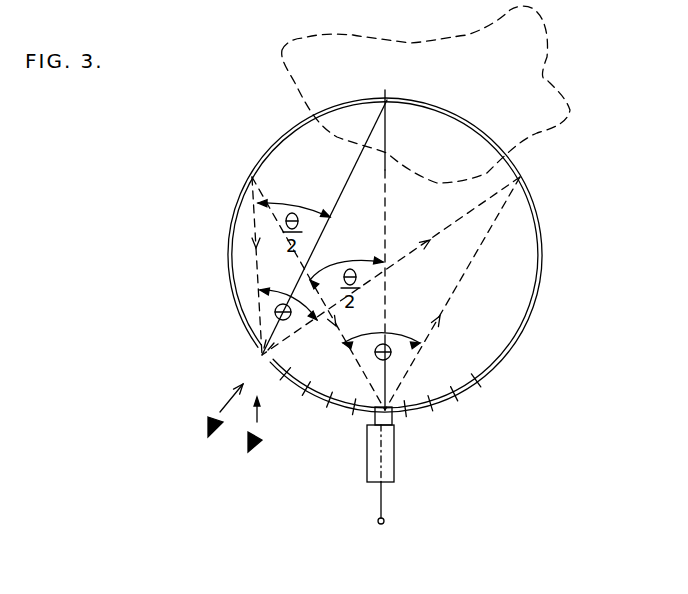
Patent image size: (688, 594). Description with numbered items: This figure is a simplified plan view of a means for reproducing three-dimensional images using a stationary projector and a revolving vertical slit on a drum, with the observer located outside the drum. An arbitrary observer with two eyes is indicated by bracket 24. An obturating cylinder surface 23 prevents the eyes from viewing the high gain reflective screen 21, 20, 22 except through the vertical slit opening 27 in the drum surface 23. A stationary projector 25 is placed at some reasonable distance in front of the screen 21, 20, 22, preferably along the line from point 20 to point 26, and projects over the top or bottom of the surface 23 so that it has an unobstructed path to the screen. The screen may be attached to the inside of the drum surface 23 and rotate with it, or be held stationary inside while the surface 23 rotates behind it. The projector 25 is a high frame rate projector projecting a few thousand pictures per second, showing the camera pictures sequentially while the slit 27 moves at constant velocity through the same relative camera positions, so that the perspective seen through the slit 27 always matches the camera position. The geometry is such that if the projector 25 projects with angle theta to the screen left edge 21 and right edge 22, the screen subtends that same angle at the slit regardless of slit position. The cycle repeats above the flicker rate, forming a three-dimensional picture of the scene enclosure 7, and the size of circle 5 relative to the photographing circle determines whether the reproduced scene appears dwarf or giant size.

The circle 5 is at (531, 302).
The scene 7 is at (545, 62).
The screen center point 20 is at (387, 100).
The screen left edge 21 is at (252, 177).
The screen right edge 22 is at (528, 173).
The obturating cylinder surface 23 is at (545, 275).
The observer 24 is at (252, 465).
The stationary projector 25 is at (399, 447).
The line end point 26 is at (373, 524).
The vertical slit opening 27 is at (258, 356).